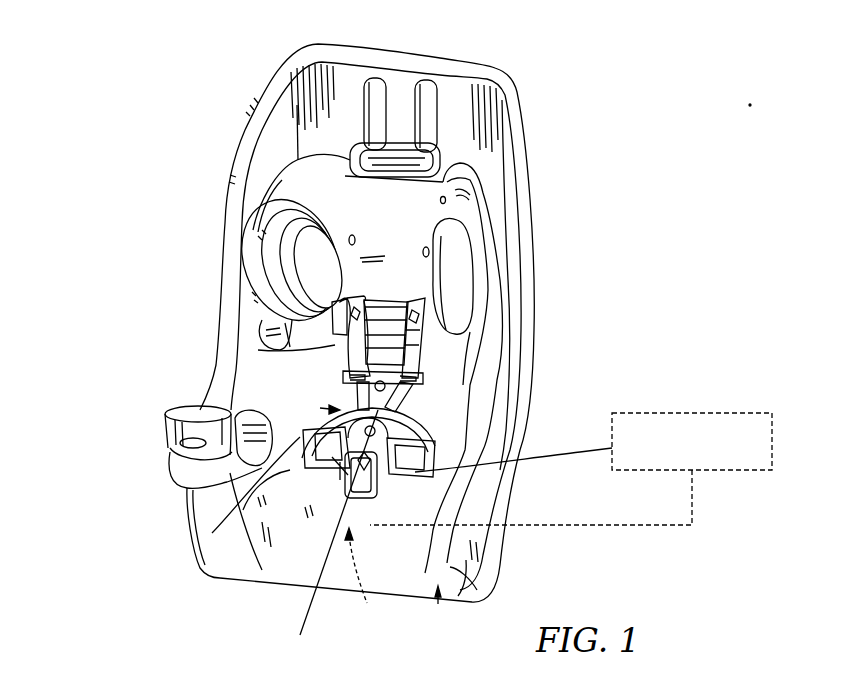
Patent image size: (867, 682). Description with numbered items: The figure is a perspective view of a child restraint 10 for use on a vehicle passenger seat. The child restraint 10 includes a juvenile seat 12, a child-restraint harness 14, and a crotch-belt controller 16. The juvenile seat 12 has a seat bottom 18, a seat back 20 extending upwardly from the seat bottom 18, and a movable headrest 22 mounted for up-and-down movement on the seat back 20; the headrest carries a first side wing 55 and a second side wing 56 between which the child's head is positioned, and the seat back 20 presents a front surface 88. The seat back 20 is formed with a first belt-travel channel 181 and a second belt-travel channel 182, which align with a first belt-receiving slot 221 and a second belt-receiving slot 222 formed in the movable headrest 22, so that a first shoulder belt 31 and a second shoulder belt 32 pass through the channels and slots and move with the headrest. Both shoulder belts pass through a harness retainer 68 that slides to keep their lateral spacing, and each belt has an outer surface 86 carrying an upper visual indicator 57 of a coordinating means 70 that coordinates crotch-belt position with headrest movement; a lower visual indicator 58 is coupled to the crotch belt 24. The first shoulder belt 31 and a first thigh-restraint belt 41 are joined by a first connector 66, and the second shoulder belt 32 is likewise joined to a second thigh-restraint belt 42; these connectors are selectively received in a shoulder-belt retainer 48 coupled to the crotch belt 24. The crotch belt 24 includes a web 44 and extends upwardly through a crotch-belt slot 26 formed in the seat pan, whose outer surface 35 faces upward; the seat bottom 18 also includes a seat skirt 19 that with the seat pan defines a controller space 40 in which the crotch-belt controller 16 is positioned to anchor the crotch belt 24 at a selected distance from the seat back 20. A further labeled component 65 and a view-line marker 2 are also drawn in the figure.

The child restraint 10 is at (138, 90).
The juvenile seat 12 is at (566, 171).
The seat back 20 is at (538, 206).
The front surface 88 is at (490, 95).
The second belt-travel channel 182 is at (366, 95).
The first belt-travel channel 181 is at (424, 88).
The movable headrest 22 is at (484, 168).
The first side wing 55 is at (493, 253).
The coordinating means 70 is at (401, 222).
The second side wing 56 is at (246, 282).
The second shoulder belt 32 is at (258, 350).
The second belt-receiving slot 222 is at (352, 232).
The first belt-receiving slot 221 is at (424, 245).
The upper visual indicator 57 is at (380, 291).
The outer surface 86 is at (346, 337).
The harness retainer 68 is at (436, 322).
The child-restraint harness 14 is at (458, 359).
The first shoulder belt 31 is at (424, 372).
The first connector 66 is at (342, 425).
The shoulder-belt retainer 48 is at (240, 398).
The second thigh-restraint belt 42 is at (334, 412).
The first thigh-restraint belt 41 is at (397, 419).
The buckle housing 65 is at (430, 437).
The crotch belt 24 is at (345, 470).
The web 44 is at (373, 491).
The lower visual indicator 58 is at (415, 472).
The crotch-belt controller 16 is at (722, 410).
The outer surface 35 is at (212, 533).
The crotch-belt slot 26 is at (345, 476).
The seat skirt 19 is at (470, 580).
The seat bottom 18 is at (439, 602).
The controller space 40 is at (361, 579).
The section line of FIG. 2 is at (250, 618).